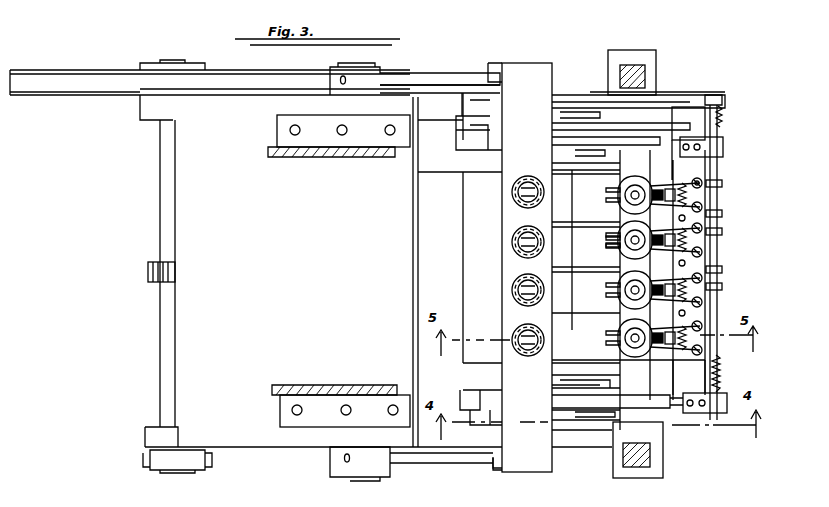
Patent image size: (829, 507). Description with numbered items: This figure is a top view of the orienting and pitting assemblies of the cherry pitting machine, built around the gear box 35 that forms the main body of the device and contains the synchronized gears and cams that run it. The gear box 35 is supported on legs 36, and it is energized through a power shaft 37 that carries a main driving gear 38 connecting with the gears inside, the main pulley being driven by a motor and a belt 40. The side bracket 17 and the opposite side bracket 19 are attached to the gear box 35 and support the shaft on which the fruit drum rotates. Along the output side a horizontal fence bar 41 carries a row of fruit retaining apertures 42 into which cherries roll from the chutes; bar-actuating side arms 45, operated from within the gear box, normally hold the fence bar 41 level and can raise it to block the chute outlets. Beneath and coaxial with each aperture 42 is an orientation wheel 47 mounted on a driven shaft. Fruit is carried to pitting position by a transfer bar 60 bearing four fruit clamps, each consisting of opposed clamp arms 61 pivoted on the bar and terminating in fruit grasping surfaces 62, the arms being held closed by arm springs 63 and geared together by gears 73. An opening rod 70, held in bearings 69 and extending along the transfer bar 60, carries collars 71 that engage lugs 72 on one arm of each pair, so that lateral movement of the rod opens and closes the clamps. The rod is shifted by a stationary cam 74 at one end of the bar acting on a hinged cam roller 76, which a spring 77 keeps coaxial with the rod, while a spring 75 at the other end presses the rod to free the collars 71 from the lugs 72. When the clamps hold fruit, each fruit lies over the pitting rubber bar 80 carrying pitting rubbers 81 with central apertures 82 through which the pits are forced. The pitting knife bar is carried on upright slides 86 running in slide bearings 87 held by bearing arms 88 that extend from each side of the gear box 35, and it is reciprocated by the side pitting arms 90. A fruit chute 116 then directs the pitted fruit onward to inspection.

The side bracket 17 is at (325, 151).
The opposite side bracket 19 is at (330, 386).
The gear box 35 is at (290, 268).
The legs 36 is at (48, 97).
The power shaft 37 is at (160, 346).
The main driving gear 38 is at (148, 270).
The belt 40 is at (78, 86).
The fence bar 41 is at (538, 68).
The fruit retaining apertures 42 is at (512, 193).
The bar-actuating side arms 45 is at (420, 88).
The orientation wheel 47 is at (530, 186).
The transfer bar 60 is at (690, 110).
The clamp arms 61 is at (722, 183).
The fruit grasping surfaces 62 is at (627, 180).
The arm springs 63 is at (700, 193).
The bearings 69 is at (718, 143).
The opening rod 70 is at (717, 246).
The collars 71 is at (722, 269).
The lugs 72 is at (722, 287).
The gears 73 is at (722, 232).
The stationary cam 74 is at (645, 92).
The spring 75 is at (720, 364).
The cam roller 76 is at (720, 100).
The spring 77 is at (722, 114).
The pitting rubber bar 80 is at (640, 367).
The pitting rubbers 81 is at (630, 342).
The central apertures 82 is at (622, 334).
The upright slides 86 is at (635, 68).
The slide bearings 87 is at (608, 60).
The bearing arms 88 is at (478, 100).
The side pitting arms 90 is at (398, 76).
The fruit chute 116 is at (596, 249).